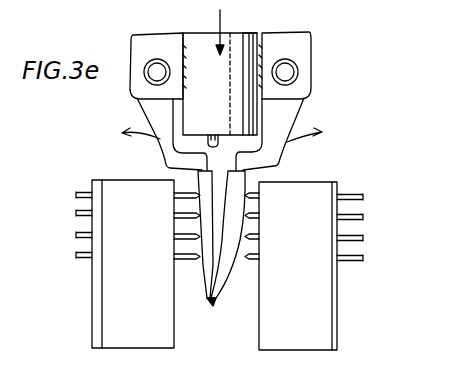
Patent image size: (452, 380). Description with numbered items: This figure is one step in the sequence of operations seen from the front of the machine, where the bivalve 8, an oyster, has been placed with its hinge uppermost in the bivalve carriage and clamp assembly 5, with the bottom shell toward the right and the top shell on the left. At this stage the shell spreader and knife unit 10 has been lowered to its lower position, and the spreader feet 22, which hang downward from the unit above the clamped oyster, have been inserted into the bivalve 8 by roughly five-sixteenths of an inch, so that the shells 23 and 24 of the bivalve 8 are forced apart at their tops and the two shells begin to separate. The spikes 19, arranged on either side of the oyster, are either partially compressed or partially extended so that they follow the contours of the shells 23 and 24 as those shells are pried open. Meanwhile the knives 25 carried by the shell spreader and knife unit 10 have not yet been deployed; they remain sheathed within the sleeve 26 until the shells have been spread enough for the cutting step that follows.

The bivalve carriage and clamp assembly 5 is at (346, 125).
The bivalve 8 is at (215, 310).
The shell spreader and knife unit 10 is at (218, 100).
The spikes 19 is at (177, 237).
The spreader feet 22 is at (168, 168).
The shell 23 is at (203, 273).
The shell 24 is at (223, 268).
The knives 25 is at (204, 129).
The sleeve 26 is at (254, 118).